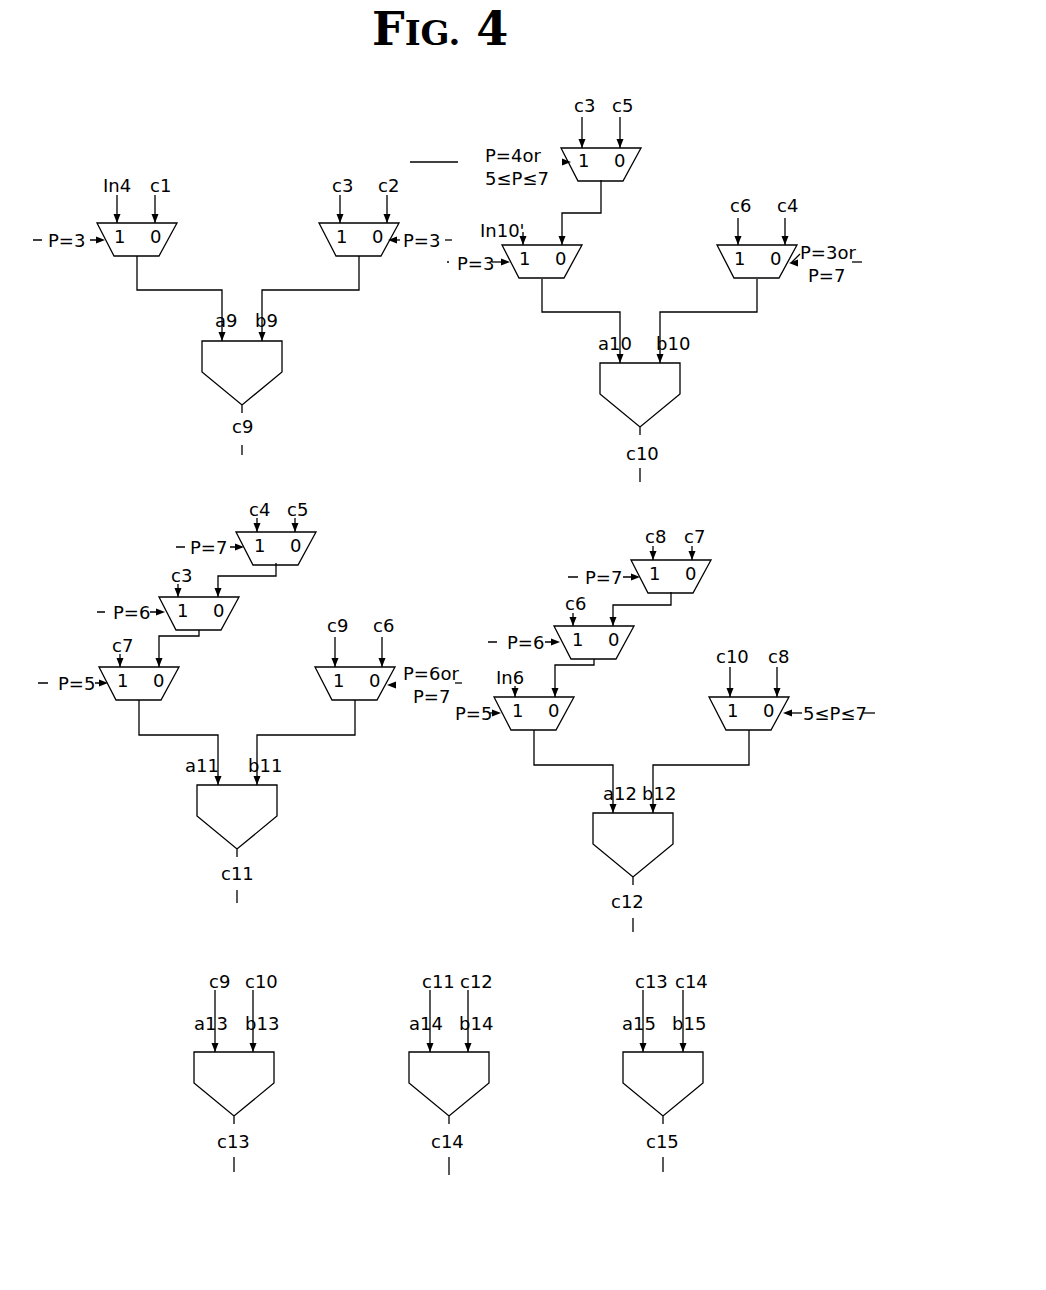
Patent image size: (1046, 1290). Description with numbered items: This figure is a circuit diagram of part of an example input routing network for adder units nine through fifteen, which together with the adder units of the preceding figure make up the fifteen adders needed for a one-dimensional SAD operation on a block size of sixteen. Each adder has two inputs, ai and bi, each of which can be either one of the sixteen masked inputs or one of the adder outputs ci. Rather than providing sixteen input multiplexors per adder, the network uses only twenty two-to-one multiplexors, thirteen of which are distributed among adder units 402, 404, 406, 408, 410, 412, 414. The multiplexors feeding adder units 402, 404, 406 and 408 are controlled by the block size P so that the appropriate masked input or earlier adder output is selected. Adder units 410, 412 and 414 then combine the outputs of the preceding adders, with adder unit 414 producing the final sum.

The adder unit 402 is at (270, 393).
The adder unit 404 is at (673, 410).
The adder unit 406 is at (272, 835).
The adder unit 408 is at (667, 863).
The adder unit 410 is at (265, 1103).
The adder unit 412 is at (480, 1103).
The adder unit 414 is at (697, 1103).